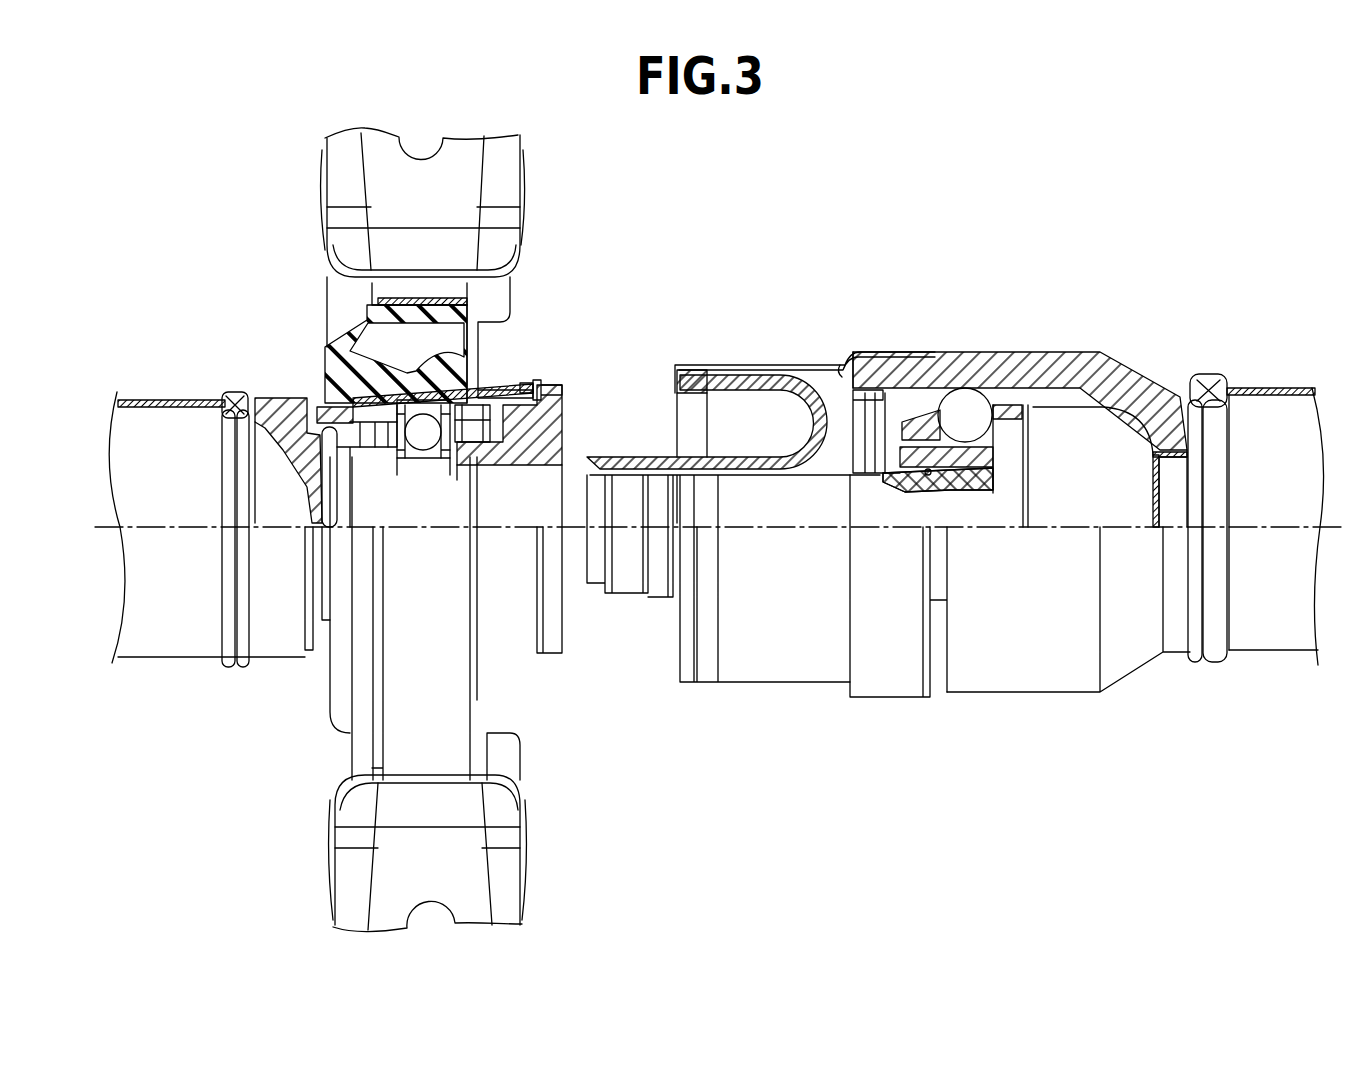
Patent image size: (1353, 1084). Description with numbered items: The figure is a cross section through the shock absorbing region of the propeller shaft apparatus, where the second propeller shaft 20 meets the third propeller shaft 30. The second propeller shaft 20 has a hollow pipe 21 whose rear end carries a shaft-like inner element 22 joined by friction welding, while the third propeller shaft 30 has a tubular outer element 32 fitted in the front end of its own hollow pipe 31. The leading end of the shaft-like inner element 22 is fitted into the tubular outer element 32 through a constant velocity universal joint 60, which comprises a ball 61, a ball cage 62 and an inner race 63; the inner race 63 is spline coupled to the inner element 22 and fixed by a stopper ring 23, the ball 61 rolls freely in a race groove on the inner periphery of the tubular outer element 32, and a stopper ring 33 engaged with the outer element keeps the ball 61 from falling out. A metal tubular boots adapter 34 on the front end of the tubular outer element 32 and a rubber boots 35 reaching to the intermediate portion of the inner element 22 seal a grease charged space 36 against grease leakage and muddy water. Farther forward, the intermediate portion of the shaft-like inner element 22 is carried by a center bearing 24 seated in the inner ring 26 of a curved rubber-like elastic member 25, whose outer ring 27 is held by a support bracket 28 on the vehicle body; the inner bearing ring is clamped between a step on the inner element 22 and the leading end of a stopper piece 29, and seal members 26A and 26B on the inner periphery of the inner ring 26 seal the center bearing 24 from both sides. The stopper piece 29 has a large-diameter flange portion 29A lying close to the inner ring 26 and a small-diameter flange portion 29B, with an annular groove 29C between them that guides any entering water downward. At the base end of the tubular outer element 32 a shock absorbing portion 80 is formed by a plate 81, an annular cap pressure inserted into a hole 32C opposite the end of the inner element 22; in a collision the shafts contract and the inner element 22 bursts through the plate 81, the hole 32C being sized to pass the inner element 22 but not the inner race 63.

The second propeller shaft 20 is at (134, 397).
The hollow pipe 21 is at (183, 402).
The shaft-like inner element 22 is at (783, 508).
The stopper ring 23 is at (925, 488).
The center bearing 24 is at (428, 448).
The rubber-like elastic member 25 is at (334, 342).
The inner ring 26 is at (332, 402).
The seal member 26A is at (340, 432).
The seal member 26B is at (503, 452).
The outer ring 27 is at (416, 298).
The support bracket 28 is at (376, 178).
The stopper piece 29 is at (567, 422).
The large-diameter flange portion 29A is at (563, 372).
The small-diameter flange portion 29B is at (495, 390).
The annular groove 29C is at (524, 386).
The third propeller shaft 30 is at (1237, 386).
The hollow pipe 31 is at (1282, 390).
The tubular outer element 32 is at (1060, 352).
The hole 32C is at (1172, 468).
The stopper ring 33 is at (847, 362).
The boots adapter 34 is at (752, 365).
The rubber boots 35 is at (812, 425).
The grease charged space 36 is at (896, 405).
The constant velocity universal joint 60 is at (966, 410).
The ball 61 is at (1012, 430).
The ball cage 62 is at (1032, 414).
The inner race 63 is at (1005, 470).
The shock absorbing portion 80 is at (1154, 478).
The plate 81 is at (1154, 500).